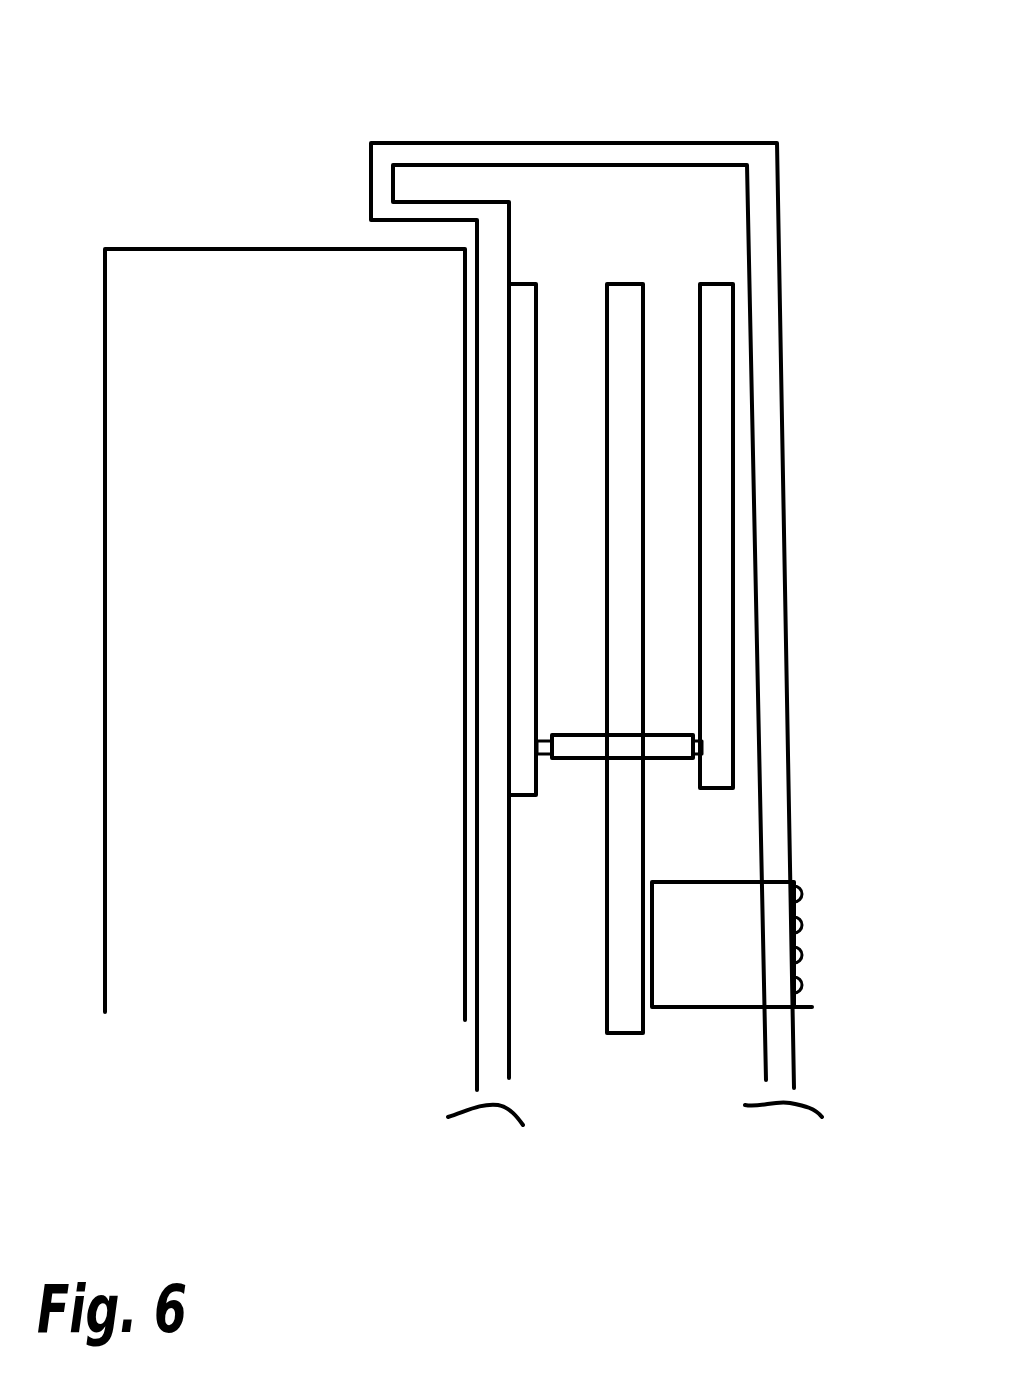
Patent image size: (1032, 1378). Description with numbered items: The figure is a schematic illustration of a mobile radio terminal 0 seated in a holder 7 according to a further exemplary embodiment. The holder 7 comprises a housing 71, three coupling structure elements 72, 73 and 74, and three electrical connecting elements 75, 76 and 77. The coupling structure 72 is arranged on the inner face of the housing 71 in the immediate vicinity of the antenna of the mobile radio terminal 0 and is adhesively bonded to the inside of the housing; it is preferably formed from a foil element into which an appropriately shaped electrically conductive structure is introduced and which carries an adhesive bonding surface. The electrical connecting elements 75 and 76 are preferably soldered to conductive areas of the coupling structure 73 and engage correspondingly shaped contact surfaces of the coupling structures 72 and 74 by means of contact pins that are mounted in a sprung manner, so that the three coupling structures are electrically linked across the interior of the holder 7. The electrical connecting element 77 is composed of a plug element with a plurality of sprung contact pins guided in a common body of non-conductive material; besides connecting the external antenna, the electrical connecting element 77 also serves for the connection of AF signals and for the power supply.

The mobile radio terminal 0 is at (195, 270).
The holder 7 is at (641, 562).
The housing 71 is at (516, 157).
The coupling structure element 72 is at (537, 345).
The coupling structure element 73 is at (647, 407).
The coupling structure element 74 is at (735, 595).
The electrical connecting element 75 is at (580, 723).
The electrical connecting element 76 is at (675, 777).
The electrical connecting element 77 is at (768, 880).